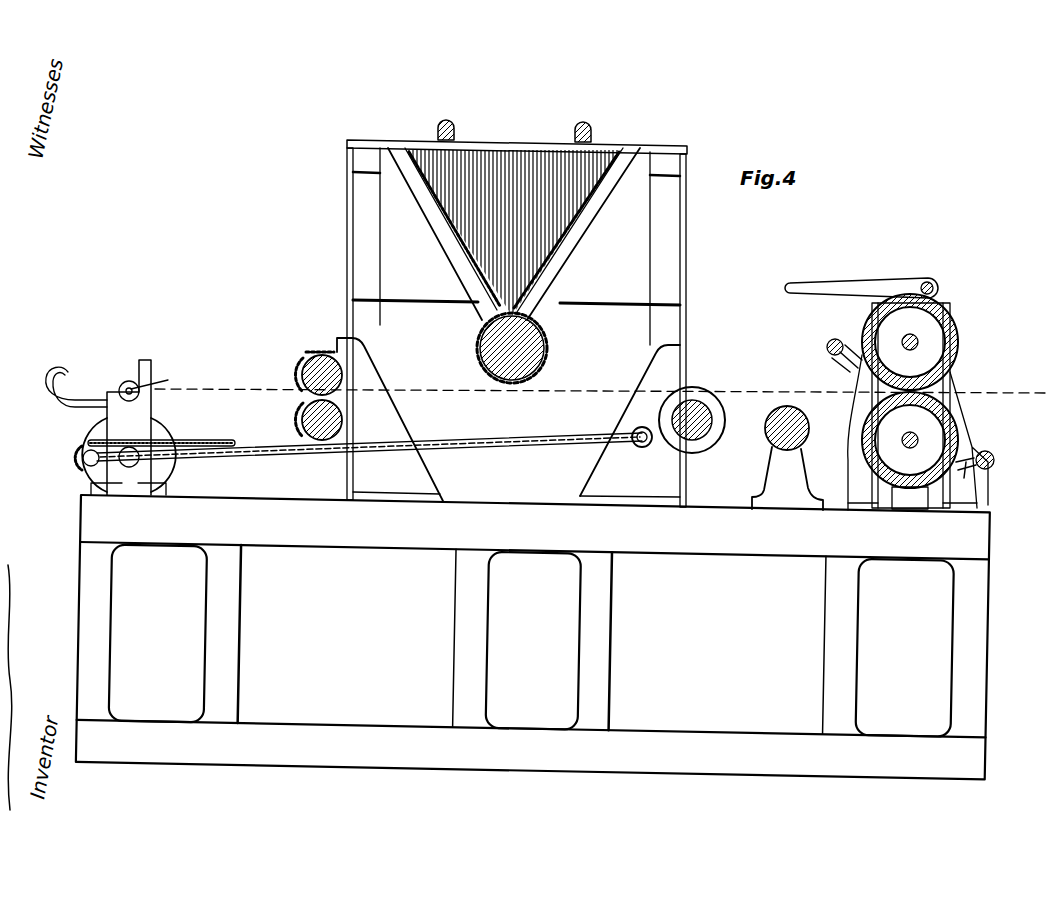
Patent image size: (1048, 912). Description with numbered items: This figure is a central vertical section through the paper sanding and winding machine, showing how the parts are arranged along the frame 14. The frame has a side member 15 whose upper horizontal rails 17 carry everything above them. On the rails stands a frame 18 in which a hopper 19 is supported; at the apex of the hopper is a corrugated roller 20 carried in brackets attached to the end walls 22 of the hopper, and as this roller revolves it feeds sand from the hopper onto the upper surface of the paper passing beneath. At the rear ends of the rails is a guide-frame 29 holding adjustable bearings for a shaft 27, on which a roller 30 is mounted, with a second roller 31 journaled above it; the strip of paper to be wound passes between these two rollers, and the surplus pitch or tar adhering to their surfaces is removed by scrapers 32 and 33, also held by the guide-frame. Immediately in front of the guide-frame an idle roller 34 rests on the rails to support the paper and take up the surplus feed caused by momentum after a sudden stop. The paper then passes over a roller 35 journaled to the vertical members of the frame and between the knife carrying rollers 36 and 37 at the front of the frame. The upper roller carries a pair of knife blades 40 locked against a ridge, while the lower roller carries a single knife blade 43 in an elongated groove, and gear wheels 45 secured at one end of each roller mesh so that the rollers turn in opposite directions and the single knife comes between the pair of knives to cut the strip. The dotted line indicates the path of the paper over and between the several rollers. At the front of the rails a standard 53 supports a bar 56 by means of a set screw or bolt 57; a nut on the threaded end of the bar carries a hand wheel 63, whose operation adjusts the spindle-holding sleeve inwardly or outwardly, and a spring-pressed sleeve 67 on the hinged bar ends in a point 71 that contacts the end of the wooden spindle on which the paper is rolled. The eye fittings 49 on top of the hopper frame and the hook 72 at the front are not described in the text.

The frame 14 is at (531, 641).
The side member 15 is at (455, 552).
The upper horizontal rails 17 is at (466, 542).
The frame 18 is at (687, 280).
The hopper 19 is at (575, 253).
The corrugated roller 20 is at (548, 343).
The end walls 22 is at (535, 273).
The shaft 27 is at (920, 435).
The guide-frame 29 is at (947, 392).
The roller 30 is at (908, 480).
The second roller 31 is at (938, 322).
The scraper 32 is at (994, 452).
The scraper 33 is at (847, 346).
The idle roller 34 is at (773, 437).
The roller 35 is at (712, 388).
The knife carrying roller 36 is at (304, 366).
The knife carrying roller 37 is at (300, 432).
The knife blades 40 is at (300, 379).
The knife blade 43 is at (298, 420).
The gear wheels 45 is at (311, 351).
The lifting eye 49 is at (445, 124).
The standard 53 is at (153, 410).
The bar 56 is at (168, 443).
The set screw or bolt 57 is at (499, 440).
The hand wheel 63 is at (172, 470).
The sleeve 67 is at (129, 383).
The point 71 is at (137, 389).
The hook 72 is at (70, 405).